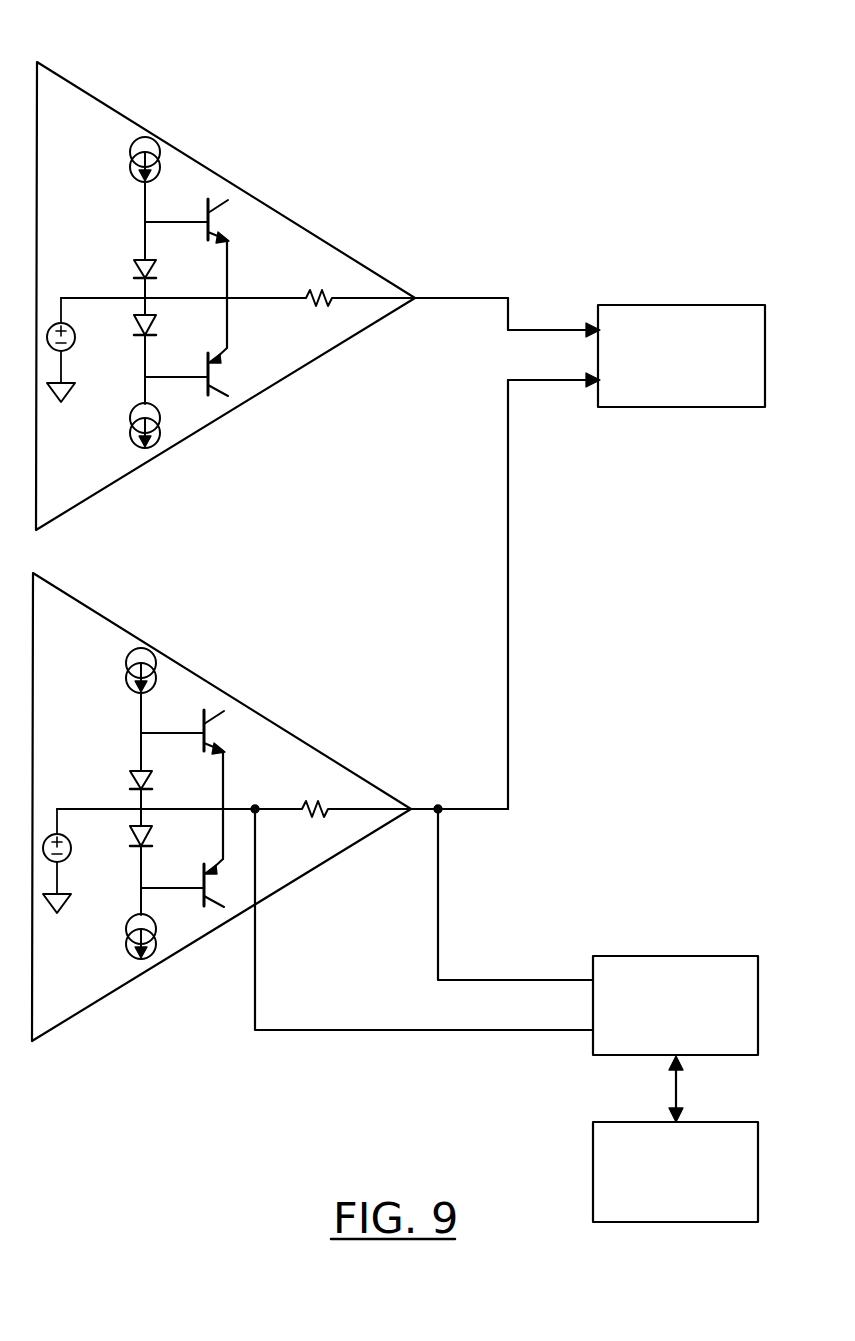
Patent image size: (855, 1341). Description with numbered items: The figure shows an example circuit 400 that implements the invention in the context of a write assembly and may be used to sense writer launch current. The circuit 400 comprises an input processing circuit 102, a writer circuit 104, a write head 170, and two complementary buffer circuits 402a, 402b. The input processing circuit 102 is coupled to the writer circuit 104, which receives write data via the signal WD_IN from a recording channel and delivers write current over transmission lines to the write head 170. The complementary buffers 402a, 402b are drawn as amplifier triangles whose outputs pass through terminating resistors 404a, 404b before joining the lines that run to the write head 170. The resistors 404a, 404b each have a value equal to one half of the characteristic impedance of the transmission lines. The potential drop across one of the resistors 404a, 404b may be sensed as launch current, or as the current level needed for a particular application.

The circuit 400 is at (328, 40).
The complementary buffer circuit 402a is at (204, 163).
The complementary buffer circuit 402b is at (200, 675).
The terminating resistor 404a is at (315, 284).
The terminating resistor 404b is at (310, 794).
The write head 170 is at (658, 305).
The writer circuit 104 is at (653, 956).
The input processing circuit 102 is at (652, 1122).